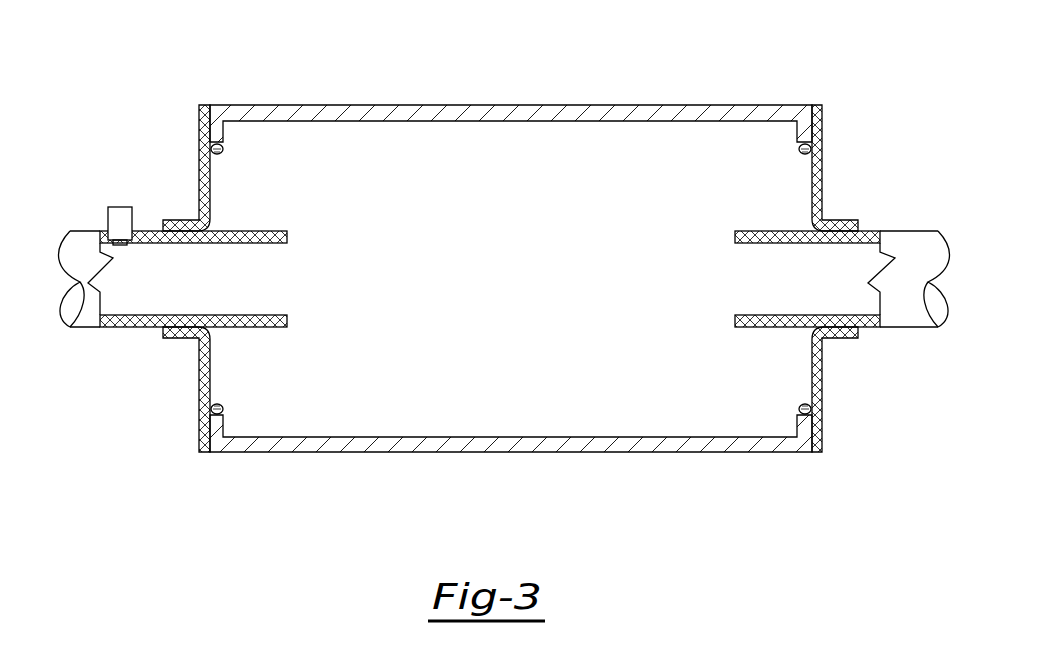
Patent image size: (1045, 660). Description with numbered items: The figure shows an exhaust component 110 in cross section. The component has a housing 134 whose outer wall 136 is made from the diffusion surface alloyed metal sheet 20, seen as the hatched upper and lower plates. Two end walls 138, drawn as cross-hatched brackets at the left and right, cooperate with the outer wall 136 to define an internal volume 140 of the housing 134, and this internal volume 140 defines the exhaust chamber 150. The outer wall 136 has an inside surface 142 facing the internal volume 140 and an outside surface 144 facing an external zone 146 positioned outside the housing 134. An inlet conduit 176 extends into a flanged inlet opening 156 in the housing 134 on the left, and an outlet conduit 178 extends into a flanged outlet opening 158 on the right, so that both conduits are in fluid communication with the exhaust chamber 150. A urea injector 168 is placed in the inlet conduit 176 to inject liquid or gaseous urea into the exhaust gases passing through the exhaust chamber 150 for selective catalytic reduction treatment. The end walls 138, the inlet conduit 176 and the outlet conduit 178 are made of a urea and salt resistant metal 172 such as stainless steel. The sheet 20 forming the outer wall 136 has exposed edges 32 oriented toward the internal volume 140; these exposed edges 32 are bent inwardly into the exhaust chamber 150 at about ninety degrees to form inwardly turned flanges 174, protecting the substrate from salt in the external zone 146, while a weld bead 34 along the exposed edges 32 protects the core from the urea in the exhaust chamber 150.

The exhaust component 110 is at (182, 111).
The diffusion surface alloyed metal sheet 20 is at (643, 115).
The exposed edges 32 is at (224, 144).
The weld bead 34 is at (223, 154).
The housing 134 is at (824, 118).
The outer wall 136 is at (327, 105).
The end walls 138 is at (197, 159).
The internal volume 140 is at (506, 402).
The inside surface 142 is at (411, 124).
The outside surface 144 is at (440, 104).
The external zone 146 is at (314, 492).
The exhaust chamber 150 is at (524, 286).
The flanged inlet opening 156 is at (178, 338).
The flanged outlet opening 158 is at (848, 338).
The urea injector 168 is at (122, 212).
The urea and salt resistant metal 172 is at (819, 157).
The inwardly turned flanges 174 is at (217, 122).
The inlet conduit 176 is at (80, 237).
The outlet conduit 178 is at (913, 237).